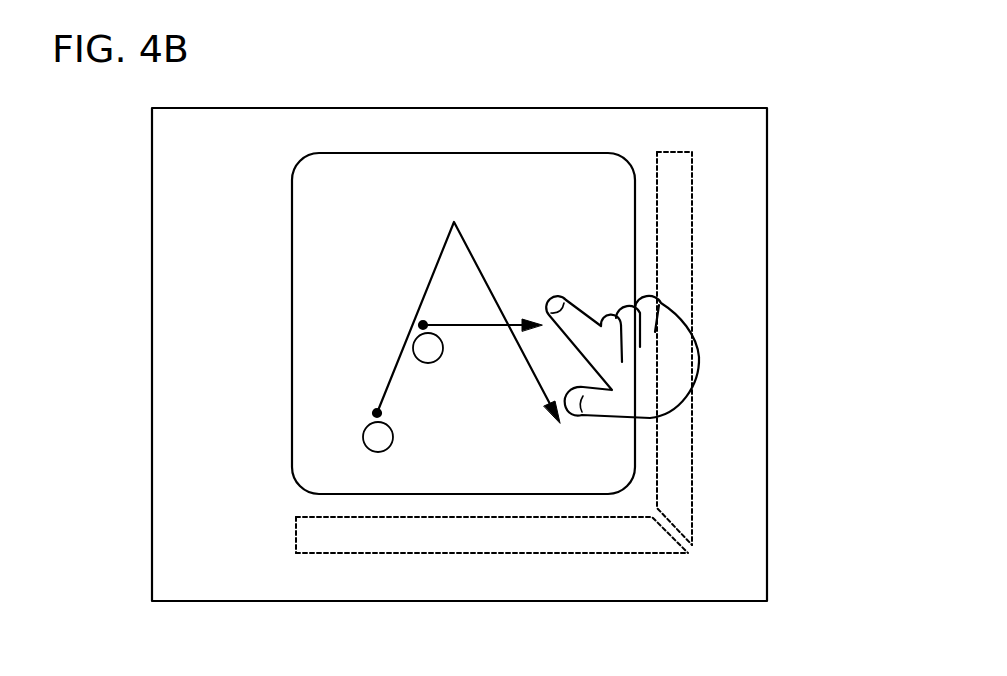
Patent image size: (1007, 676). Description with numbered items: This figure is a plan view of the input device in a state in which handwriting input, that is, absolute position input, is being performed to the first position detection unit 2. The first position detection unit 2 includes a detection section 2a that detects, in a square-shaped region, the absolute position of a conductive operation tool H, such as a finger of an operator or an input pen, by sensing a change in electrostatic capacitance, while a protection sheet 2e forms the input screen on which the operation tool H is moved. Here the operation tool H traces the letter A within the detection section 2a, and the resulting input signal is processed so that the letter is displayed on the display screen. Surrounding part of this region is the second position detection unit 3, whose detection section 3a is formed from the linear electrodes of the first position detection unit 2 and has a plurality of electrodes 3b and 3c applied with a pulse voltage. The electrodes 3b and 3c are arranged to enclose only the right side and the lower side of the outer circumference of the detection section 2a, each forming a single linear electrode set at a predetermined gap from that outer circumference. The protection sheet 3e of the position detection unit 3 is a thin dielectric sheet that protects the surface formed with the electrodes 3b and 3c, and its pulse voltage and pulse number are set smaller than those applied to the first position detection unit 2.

The first position detection unit 2 is at (561, 141).
The detection section 2a is at (531, 152).
The protection sheet 2e is at (480, 187).
The position detection unit 3 is at (554, 354).
The detection section 3a is at (673, 152).
The electrode 3b is at (692, 267).
The electrode 3c is at (581, 553).
The protection sheet 3e is at (727, 127).
The operation tool H is at (700, 367).